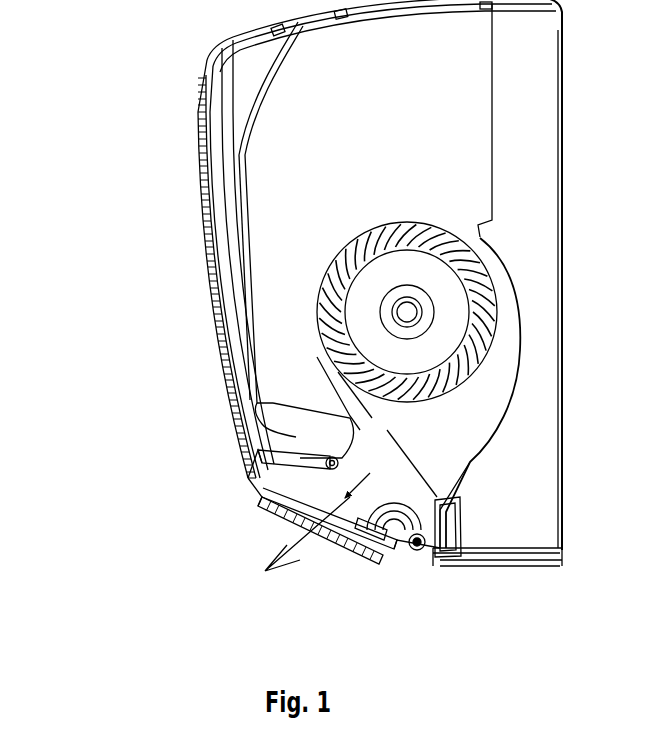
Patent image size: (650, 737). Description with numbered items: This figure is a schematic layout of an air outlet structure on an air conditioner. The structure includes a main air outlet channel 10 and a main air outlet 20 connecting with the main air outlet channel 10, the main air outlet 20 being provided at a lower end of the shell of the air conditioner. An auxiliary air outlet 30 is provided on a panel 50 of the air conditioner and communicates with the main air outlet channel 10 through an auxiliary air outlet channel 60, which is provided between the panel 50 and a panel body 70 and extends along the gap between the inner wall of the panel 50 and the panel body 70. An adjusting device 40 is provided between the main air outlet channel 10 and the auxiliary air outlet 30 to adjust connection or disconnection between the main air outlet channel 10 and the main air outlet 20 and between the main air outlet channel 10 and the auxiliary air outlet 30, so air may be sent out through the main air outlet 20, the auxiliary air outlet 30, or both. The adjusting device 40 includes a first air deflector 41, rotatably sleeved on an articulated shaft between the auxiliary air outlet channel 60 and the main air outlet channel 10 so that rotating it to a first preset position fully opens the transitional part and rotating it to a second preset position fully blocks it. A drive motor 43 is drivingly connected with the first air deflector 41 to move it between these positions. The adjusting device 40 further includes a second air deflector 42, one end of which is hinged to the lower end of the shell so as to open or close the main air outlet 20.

The main air outlet channel 10 is at (467, 405).
The main air outlet 20 is at (352, 522).
The auxiliary air outlet 30 is at (202, 180).
The adjusting device 40 is at (216, 490).
The first air deflector 41 is at (288, 453).
The second air deflector 42 is at (283, 523).
The drive motor 43 is at (322, 468).
The panel 50 is at (214, 290).
The auxiliary air outlet channel 60 is at (228, 238).
The panel body 70 is at (228, 130).